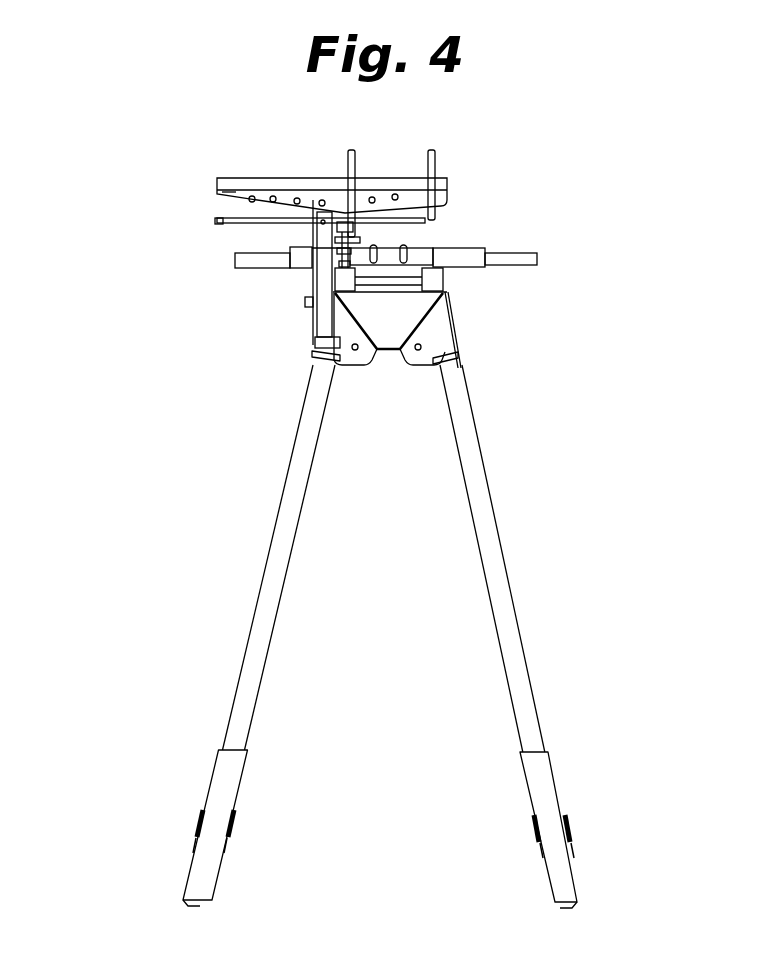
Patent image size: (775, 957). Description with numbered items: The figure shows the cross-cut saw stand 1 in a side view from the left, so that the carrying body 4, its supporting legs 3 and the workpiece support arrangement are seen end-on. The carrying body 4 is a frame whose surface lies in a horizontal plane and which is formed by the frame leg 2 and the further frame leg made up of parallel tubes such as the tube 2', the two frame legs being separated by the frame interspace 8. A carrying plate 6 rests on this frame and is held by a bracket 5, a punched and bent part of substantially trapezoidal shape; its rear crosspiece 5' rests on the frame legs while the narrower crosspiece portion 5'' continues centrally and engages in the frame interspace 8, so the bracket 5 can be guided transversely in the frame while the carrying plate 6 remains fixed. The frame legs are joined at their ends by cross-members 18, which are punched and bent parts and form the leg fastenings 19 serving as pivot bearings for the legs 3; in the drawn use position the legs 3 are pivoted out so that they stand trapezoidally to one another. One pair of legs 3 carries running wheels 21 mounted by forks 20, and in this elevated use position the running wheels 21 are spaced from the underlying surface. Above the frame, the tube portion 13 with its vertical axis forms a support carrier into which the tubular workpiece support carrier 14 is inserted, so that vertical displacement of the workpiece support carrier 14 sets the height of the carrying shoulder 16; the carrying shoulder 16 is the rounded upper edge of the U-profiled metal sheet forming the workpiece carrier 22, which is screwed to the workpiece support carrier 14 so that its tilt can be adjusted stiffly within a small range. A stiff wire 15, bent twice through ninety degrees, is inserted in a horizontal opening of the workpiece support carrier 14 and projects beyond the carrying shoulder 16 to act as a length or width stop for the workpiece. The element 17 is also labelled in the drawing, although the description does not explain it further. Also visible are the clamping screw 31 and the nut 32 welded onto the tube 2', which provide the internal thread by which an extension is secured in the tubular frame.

The cross-cut saw stand 1 is at (606, 118).
The frame leg 2 is at (452, 299).
The frame leg tube 2' is at (285, 298).
The legs 3 is at (266, 608).
The carrying body 4 is at (460, 278).
The bracket 5 is at (388, 235).
The rear crosspiece 5' is at (474, 210).
The narrower crosspiece portion 5'' is at (465, 189).
The carrying plate 6 is at (534, 260).
The frame interspace 8 is at (392, 283).
The tube portion 13 is at (322, 320).
The workpiece support carrier 14 is at (300, 238).
The wire 15 is at (347, 152).
The carrying shoulder 16 is at (240, 180).
The screw 17 is at (323, 207).
The cross-member 18 is at (390, 344).
The leg fastening 19 is at (348, 364).
The fork 20 is at (197, 827).
The running wheel 21 is at (228, 780).
The workpiece carrier 22 is at (215, 199).
The clamping screw 31 is at (293, 249).
The nut 32 is at (310, 275).